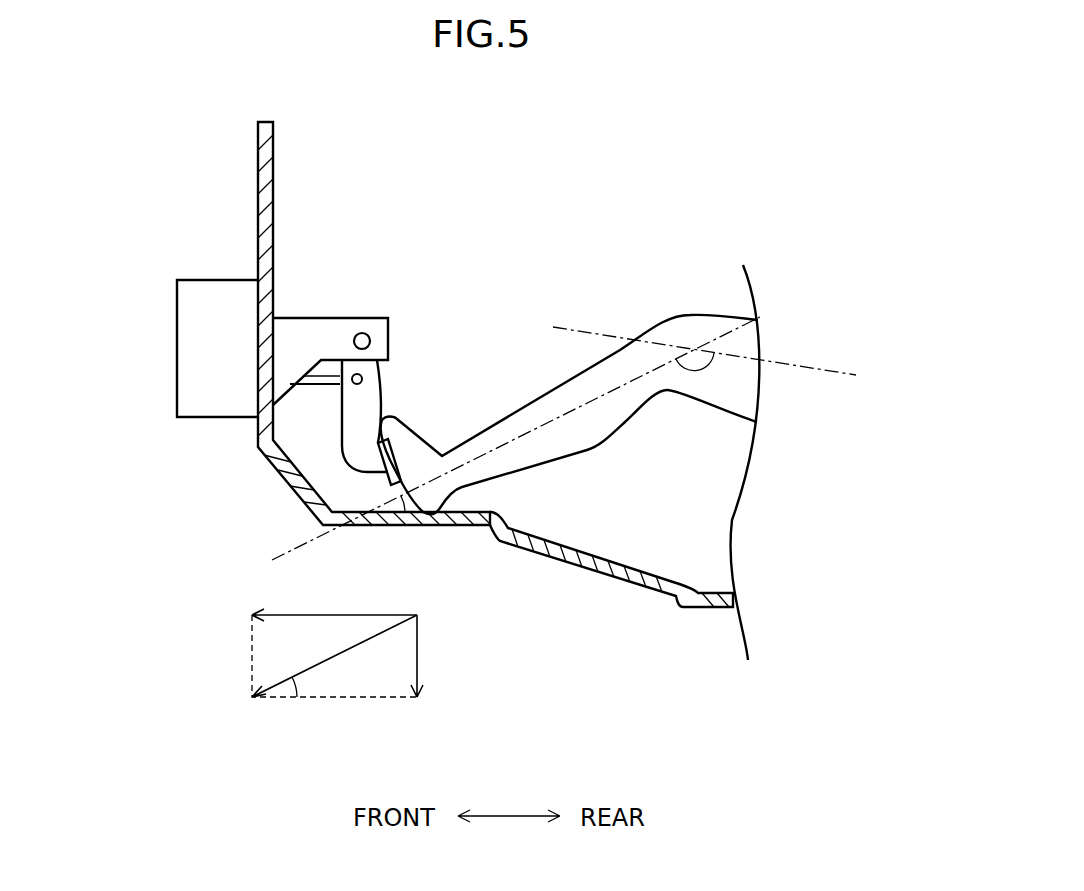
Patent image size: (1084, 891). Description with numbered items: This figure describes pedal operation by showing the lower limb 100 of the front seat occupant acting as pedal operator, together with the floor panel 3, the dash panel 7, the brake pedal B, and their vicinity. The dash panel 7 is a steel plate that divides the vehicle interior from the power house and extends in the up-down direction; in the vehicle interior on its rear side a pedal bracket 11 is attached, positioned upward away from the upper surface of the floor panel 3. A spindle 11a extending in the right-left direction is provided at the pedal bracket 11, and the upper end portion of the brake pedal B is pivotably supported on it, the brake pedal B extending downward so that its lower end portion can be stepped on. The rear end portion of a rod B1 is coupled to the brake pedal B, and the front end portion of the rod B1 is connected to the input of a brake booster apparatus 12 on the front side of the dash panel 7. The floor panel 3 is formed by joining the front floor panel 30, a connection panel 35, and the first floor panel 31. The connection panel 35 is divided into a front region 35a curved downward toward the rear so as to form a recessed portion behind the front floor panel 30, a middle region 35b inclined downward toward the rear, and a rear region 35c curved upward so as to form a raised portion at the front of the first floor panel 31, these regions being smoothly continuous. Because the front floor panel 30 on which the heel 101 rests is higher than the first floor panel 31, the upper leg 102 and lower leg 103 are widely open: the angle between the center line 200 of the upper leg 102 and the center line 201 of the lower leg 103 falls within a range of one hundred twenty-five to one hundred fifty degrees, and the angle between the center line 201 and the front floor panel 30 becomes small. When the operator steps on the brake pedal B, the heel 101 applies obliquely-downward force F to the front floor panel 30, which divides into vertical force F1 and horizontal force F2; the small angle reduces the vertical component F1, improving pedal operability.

The dash panel 7 is at (258, 162).
The pedal bracket 11 is at (332, 318).
The spindle 11a is at (370, 341).
The brake booster apparatus 12 is at (177, 390).
The rod B1 is at (322, 383).
The brake pedal B is at (343, 445).
The front floor panel 30 is at (477, 526).
The connection panel 35 is at (574, 562).
The front region 35a is at (505, 523).
The middle region 35b is at (603, 559).
The rear region 35c is at (692, 590).
The floor panel 3 is at (700, 624).
The first floor panel 31 is at (728, 608).
The lower limb 100 is at (688, 303).
The heel 101 is at (430, 514).
The upper leg 102 is at (750, 333).
The lower leg 103 is at (548, 406).
The center line of the upper leg 200 is at (733, 356).
The center line of the lower leg 201 is at (490, 451).
The force F is at (343, 652).
The force F1 is at (418, 645).
The force F2 is at (307, 616).